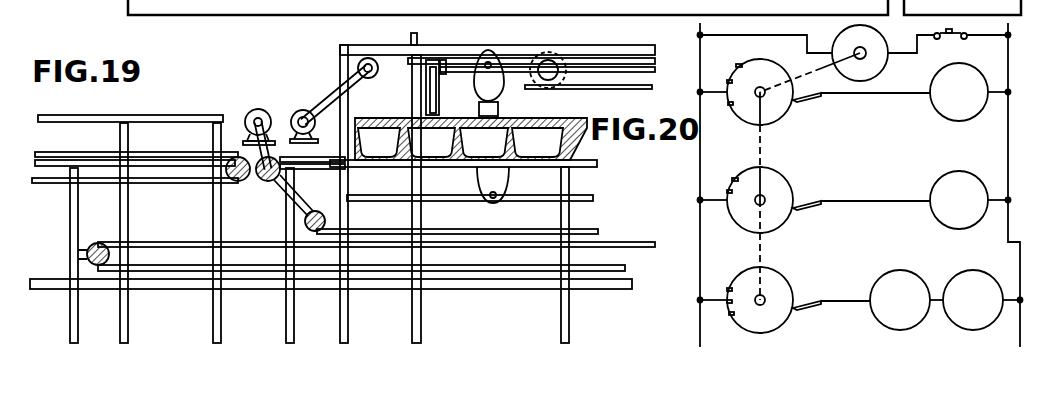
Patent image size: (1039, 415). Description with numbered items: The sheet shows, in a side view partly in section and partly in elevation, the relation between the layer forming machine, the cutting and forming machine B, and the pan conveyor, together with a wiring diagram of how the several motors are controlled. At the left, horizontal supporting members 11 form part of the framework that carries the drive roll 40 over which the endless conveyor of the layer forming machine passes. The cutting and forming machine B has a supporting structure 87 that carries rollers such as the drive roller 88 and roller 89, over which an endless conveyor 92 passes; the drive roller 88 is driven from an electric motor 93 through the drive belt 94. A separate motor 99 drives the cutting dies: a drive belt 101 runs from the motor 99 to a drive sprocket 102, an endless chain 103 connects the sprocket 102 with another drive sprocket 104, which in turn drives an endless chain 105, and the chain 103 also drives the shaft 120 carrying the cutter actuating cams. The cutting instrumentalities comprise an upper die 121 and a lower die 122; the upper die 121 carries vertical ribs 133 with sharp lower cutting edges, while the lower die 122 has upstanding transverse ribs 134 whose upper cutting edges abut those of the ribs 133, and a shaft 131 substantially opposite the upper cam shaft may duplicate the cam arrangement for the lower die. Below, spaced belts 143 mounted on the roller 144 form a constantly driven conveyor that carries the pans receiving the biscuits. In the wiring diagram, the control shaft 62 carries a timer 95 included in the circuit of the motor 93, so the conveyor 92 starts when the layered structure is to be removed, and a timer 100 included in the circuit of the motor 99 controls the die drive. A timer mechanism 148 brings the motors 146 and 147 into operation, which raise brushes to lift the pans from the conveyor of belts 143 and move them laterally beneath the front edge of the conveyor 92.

In FIG. 19, the horizontal supporting members 11 is at (152, 117).
In FIG. 19, the drive roll 40 is at (230, 157).
In FIG. 19, the supporting structure 87 is at (422, 322).
In FIG. 19, the drive roller 88 is at (267, 181).
In FIG. 19, the roller 89 is at (315, 211).
In FIG. 19, the endless conveyor 92 is at (283, 205).
In FIG. 19, the electric motor 93 is at (259, 112).
In FIG. 20, the electric motor 93 is at (960, 64).
In FIG. 19, the drive belt 94 is at (249, 142).
In FIG. 19, the motor 99 is at (304, 109).
In FIG. 20, the motor 99 is at (953, 172).
In FIG. 19, the drive belt 101 is at (353, 88).
In FIG. 19, the drive sprocket 102 is at (367, 60).
In FIG. 19, the endless chain 103 is at (455, 80).
In FIG. 19, the drive sprocket 104 is at (542, 82).
In FIG. 19, the endless chain 105 is at (573, 88).
In FIG. 19, the shaft 120 is at (486, 63).
In FIG. 19, the upper die 121 is at (377, 120).
In FIG. 19, the lower die 122 is at (595, 163).
In FIG. 19, the shaft 131 is at (493, 199).
In FIG. 19, the vertical ribs 133 is at (405, 132).
In FIG. 19, the transverse ribs 134 is at (458, 145).
In FIG. 19, the belts 143 is at (637, 243).
In FIG. 19, the roller 144 is at (97, 243).
In FIG. 19, the cutting and forming machine B is at (333, 59).
In FIG. 20, the control shaft 62 is at (880, 43).
In FIG. 20, the timer 95 is at (780, 112).
In FIG. 20, the timer 100 is at (777, 175).
In FIG. 20, the motor 146 is at (975, 327).
In FIG. 20, the motor 147 is at (890, 326).
In FIG. 20, the timer mechanism 148 is at (773, 271).